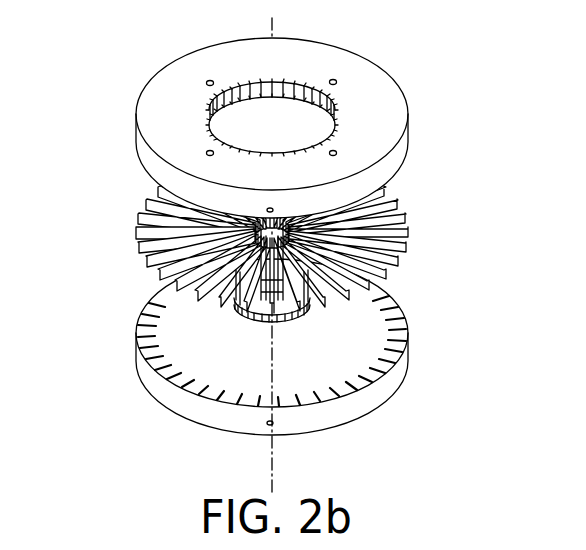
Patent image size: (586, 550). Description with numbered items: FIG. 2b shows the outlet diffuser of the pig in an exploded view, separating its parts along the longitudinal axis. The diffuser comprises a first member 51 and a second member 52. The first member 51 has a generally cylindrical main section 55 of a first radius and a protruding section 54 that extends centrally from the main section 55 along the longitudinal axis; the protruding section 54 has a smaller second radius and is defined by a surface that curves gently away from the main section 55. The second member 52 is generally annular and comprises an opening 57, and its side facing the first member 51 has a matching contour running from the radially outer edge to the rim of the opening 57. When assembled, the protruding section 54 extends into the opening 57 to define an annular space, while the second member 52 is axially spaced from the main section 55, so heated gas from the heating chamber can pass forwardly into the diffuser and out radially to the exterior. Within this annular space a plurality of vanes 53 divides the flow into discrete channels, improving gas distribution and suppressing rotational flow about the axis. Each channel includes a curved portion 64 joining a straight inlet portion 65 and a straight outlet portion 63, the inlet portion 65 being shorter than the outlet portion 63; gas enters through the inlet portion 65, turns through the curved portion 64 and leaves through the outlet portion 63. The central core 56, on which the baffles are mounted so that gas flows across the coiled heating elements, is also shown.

The first member 51 is at (387, 403).
The second member 52 is at (408, 123).
The vanes 53 is at (273, 233).
The protruding section 54 is at (240, 320).
The main section 55 is at (412, 320).
The central core 56 is at (307, 89).
The opening 57 is at (292, 118).
The straight outlet portion 63 is at (130, 238).
The curved portion 64 is at (150, 265).
The straight inlet portion 65 is at (235, 228).